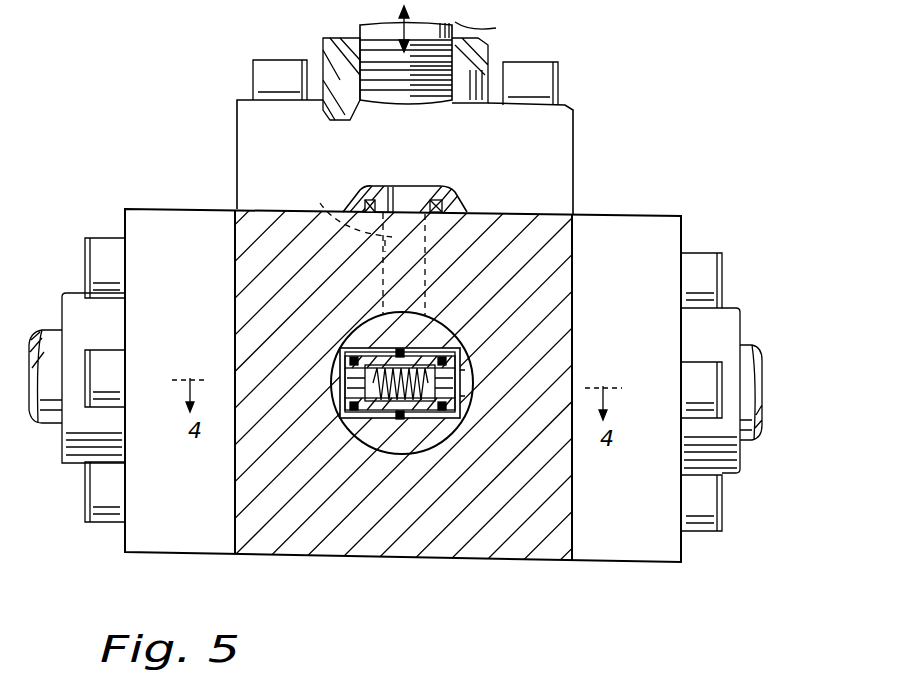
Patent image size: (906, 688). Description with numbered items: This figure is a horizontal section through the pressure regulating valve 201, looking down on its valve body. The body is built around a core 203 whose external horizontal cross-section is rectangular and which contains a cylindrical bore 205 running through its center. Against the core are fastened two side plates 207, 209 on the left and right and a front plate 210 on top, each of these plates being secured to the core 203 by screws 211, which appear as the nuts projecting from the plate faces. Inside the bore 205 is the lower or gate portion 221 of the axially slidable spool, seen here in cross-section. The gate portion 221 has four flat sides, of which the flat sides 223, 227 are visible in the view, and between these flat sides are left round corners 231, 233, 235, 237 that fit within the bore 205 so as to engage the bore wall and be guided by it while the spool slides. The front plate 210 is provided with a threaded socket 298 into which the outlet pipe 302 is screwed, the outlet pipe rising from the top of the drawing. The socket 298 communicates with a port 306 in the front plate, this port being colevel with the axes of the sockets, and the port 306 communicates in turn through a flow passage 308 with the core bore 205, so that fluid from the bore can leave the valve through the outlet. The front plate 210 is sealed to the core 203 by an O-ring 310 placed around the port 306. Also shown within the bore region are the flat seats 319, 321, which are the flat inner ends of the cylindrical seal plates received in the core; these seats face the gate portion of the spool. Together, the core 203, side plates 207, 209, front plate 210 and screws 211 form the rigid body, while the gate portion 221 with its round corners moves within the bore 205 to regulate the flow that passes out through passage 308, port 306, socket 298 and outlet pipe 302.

The pressure regulating valve 201 is at (590, 142).
The core 203 is at (330, 540).
The cylindrical bore 205 is at (400, 450).
The side plate 207 is at (660, 540).
The side plate 209 is at (145, 528).
The front plate 210 is at (237, 115).
The screws 211 is at (262, 75).
The gate portion 221 is at (420, 438).
The flat side 223 is at (372, 322).
The flat side 227 is at (378, 445).
The round corner 231 is at (455, 342).
The round corner 233 is at (450, 428).
The round corner 235 is at (350, 432).
The round corner 237 is at (350, 335).
The threaded socket 298 is at (323, 62).
The outlet pipe 302 is at (360, 32).
The port 306 is at (412, 190).
The flow passage 308 is at (332, 222).
The O-ring 310 is at (450, 198).
The seat 319 is at (342, 378).
The seat 321 is at (468, 372).